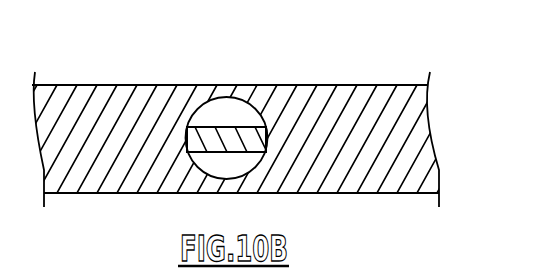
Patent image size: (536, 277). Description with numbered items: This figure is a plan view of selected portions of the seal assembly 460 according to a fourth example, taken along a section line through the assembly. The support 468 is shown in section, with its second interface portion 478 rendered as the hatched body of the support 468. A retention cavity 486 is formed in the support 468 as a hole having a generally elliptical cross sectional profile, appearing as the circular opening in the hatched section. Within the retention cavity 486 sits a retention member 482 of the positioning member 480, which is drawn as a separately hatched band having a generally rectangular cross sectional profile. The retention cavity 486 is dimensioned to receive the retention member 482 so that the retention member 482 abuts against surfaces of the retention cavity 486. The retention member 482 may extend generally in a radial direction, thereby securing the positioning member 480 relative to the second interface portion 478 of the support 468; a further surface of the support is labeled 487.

The seal assembly 460 is at (248, 129).
The support 468 is at (372, 85).
The second interface portion 478 is at (407, 142).
The positioning member 480 is at (260, 100).
The retention member 482 is at (226, 126).
The retention cavity 486 is at (232, 172).
The lower surface of tissue 487 is at (120, 193).